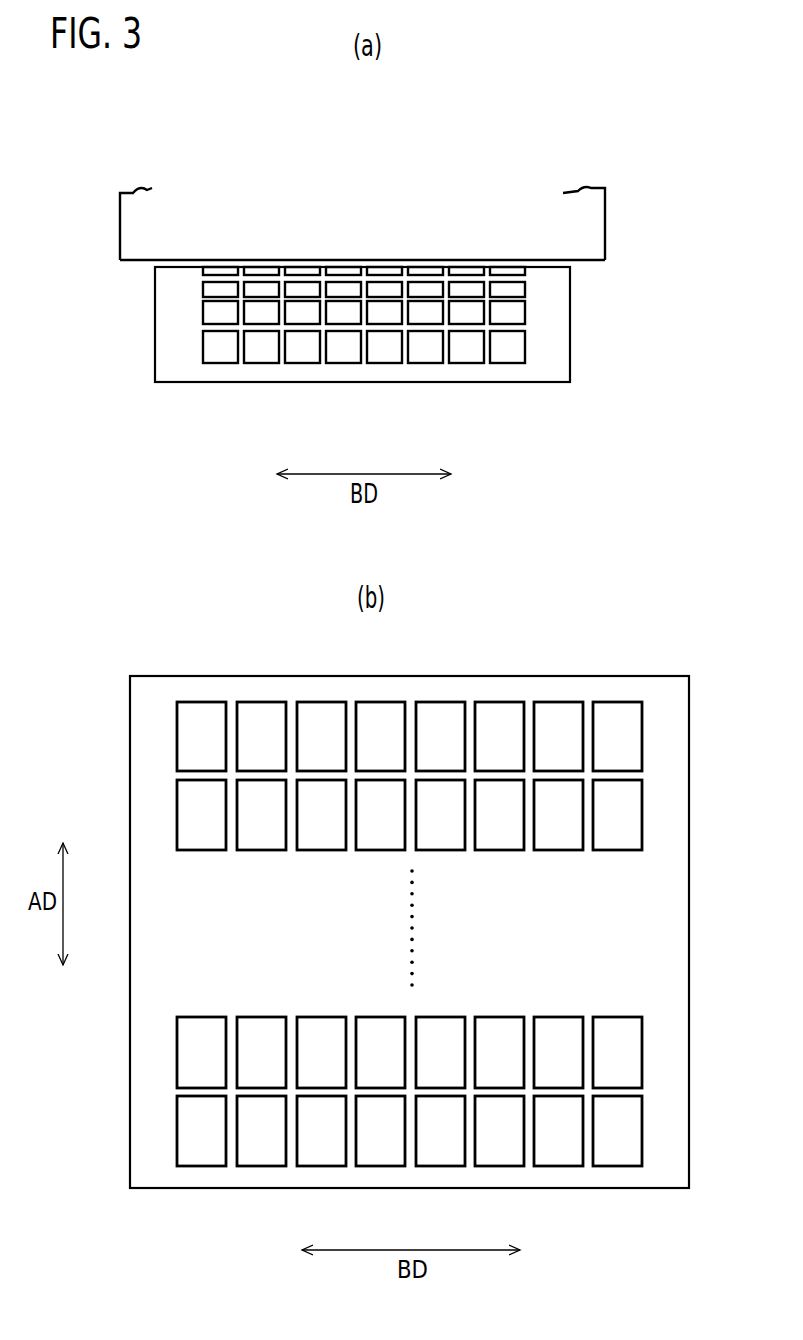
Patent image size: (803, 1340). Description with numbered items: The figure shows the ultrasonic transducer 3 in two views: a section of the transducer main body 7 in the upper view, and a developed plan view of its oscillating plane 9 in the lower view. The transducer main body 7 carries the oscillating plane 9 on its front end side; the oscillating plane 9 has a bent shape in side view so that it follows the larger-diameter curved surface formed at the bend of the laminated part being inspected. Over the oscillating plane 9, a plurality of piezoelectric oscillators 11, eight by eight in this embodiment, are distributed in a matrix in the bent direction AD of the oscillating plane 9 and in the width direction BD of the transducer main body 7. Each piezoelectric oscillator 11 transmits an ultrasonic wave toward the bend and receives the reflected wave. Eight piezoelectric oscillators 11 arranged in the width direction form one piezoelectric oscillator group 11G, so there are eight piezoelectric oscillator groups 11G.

The ultrasonic transducer 3 is at (421, 177).
The transducer main body 7 is at (605, 222).
The oscillating plane 9 is at (533, 370).
The piezoelectric oscillator 11 is at (515, 313).
The piezoelectric oscillator group 11G is at (196, 290).